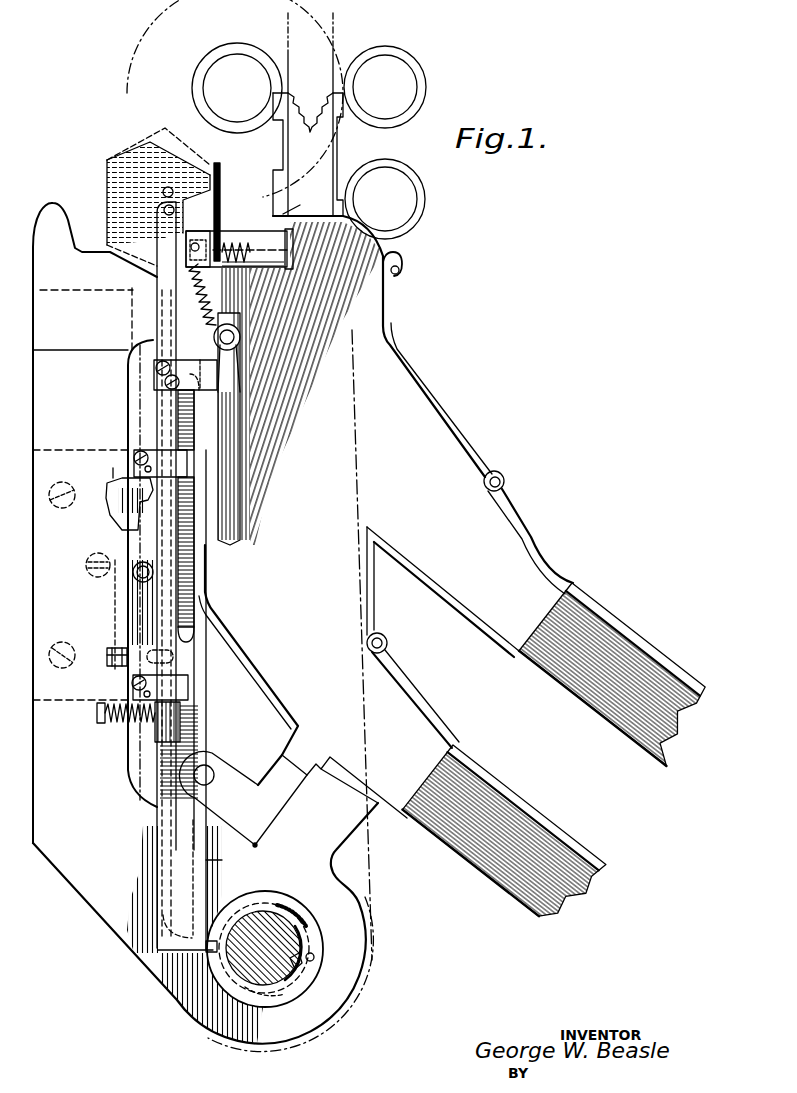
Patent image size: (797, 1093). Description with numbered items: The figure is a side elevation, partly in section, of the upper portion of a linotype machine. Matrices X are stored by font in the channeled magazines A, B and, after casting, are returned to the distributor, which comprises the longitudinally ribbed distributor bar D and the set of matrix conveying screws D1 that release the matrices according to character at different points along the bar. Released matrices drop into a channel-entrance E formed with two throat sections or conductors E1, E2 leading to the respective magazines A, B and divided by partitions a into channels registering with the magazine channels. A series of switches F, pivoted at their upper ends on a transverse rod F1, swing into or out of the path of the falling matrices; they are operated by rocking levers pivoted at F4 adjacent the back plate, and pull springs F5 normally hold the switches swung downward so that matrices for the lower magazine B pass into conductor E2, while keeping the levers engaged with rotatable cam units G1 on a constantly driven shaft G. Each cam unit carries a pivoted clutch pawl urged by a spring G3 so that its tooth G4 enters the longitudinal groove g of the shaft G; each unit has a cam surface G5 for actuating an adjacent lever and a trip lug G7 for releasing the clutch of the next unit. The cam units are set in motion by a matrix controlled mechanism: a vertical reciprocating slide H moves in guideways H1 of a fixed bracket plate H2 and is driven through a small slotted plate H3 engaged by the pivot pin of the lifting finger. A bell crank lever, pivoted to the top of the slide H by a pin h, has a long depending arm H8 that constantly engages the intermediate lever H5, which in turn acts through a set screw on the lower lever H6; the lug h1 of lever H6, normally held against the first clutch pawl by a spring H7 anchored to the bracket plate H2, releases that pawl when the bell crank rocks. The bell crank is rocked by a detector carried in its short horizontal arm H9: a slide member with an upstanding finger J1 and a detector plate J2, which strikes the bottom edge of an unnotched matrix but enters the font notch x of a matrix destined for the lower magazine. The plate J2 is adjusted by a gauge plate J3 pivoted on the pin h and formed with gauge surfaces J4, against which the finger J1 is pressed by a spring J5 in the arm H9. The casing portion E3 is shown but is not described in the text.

The distributor bar D is at (325, 43).
The matrix conveying screws D1 is at (309, 141).
The matrices X is at (308, 154).
The font notch x is at (298, 206).
The channel-entrance E is at (386, 311).
The conductor E1 is at (516, 552).
The conductor E2 is at (403, 720).
The frame casing E3 is at (83, 494).
The upper magazine A is at (627, 647).
The lower magazine B is at (530, 808).
The switches F is at (246, 410).
The transverse rod F1 is at (236, 340).
The pivot of rocking levers F4 is at (207, 773).
The pull springs F5 is at (199, 298).
The shaft G is at (300, 938).
The cam units G1 is at (316, 959).
The spring G3 is at (291, 908).
The tooth G4 is at (273, 992).
The cam surface G5 is at (266, 892).
The trip lug G7 is at (221, 880).
The longitudinal groove g is at (297, 966).
The slide H is at (160, 314).
The guideways H1 is at (187, 457).
The bracket plate H2 is at (111, 561).
The slotted plate H3 is at (193, 395).
The intermediate lever H5 is at (132, 506).
The lower lever H6 is at (194, 663).
The spring H7 is at (133, 718).
The vertical arm H8 is at (192, 548).
The horizontal arm H9 is at (272, 298).
The pin h is at (164, 212).
The lug h1 is at (210, 953).
The upstanding finger J1 is at (218, 240).
The detector plate J2 is at (290, 257).
The gauge plate J3 is at (197, 172).
The gauge surfaces J4 is at (160, 147).
The spring J5 is at (244, 256).
The partitions a is at (250, 470).